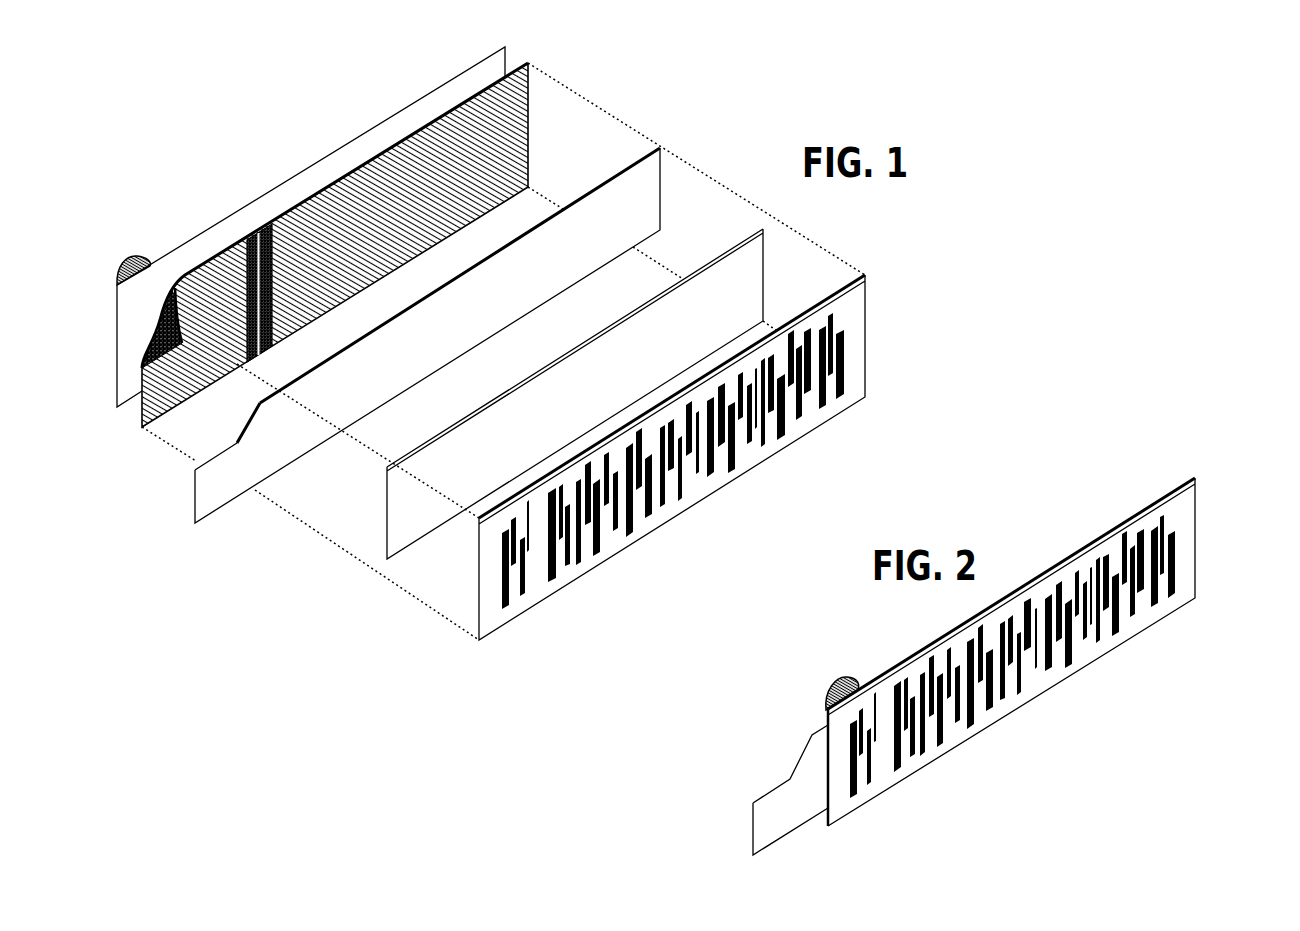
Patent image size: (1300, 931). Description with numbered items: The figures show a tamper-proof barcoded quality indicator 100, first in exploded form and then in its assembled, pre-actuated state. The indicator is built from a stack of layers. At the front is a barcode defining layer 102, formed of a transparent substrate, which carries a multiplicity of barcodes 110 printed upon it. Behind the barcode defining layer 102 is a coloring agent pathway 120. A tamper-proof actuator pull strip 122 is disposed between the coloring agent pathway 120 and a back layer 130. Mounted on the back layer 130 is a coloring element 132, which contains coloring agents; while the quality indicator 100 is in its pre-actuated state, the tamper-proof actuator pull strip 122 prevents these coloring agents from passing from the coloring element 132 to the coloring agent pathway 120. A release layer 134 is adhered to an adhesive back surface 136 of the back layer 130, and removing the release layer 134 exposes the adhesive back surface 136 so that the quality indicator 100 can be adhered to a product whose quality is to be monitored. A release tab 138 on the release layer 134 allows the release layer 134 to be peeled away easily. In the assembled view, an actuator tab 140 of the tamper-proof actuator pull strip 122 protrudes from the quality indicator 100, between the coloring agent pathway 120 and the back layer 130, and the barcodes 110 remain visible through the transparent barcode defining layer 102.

In FIG. 2, the tamper-proof barcoded quality indicator 100 is at (1001, 668).
In FIG. 1, the barcode defining layer 102 is at (669, 457).
In FIG. 2, the barcode defining layer 102 is at (1039, 650).
In FIG. 1, the barcodes 110 is at (500, 578).
In FIG. 2, the barcodes 110 is at (1185, 572).
In FIG. 1, the coloring agent pathway 120 is at (752, 272).
In FIG. 1, the tamper-proof actuator pull strip 122 is at (645, 207).
In FIG. 1, the back layer 130 is at (418, 150).
In FIG. 1, the coloring element 132 is at (262, 262).
In FIG. 1, the release layer 134 is at (345, 163).
In FIG. 1, the adhesive back surface 136 is at (158, 307).
In FIG. 1, the release tab 138 is at (123, 260).
In FIG. 2, the release tab 138 is at (838, 678).
In FIG. 2, the actuator tab 140 is at (797, 778).